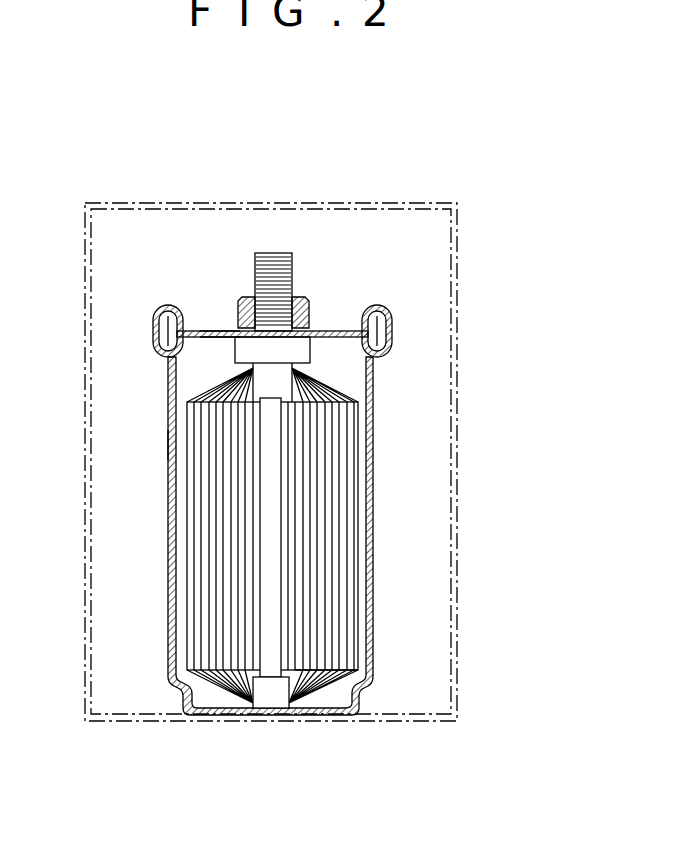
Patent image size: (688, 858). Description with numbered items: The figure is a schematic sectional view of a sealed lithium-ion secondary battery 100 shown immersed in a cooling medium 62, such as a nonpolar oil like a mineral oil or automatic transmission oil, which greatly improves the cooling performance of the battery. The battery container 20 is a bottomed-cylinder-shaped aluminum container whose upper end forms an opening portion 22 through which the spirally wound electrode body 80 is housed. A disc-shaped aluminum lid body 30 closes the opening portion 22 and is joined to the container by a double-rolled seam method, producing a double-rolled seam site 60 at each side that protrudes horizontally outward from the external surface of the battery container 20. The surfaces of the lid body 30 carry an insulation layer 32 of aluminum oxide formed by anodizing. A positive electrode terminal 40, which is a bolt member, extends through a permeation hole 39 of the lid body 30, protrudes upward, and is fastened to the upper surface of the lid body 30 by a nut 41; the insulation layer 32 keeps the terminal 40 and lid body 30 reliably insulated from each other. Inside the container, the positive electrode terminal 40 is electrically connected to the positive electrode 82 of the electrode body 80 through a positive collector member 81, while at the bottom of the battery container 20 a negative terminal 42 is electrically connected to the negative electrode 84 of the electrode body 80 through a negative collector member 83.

The lithium-ion secondary battery 100 is at (398, 188).
The battery container 20 is at (374, 445).
The opening portion 22 is at (216, 348).
The lid body 30 is at (335, 336).
The insulation layer 32 is at (199, 330).
The permeation hole 39 is at (270, 339).
The positive electrode terminal 40 is at (290, 266).
The nut 41 is at (251, 297).
The negative terminal 42 is at (263, 700).
The double-rolled seam site 60 is at (153, 314).
The cooling medium 62 is at (432, 322).
The electrode body 80 is at (358, 524).
The positive collector member 81 is at (310, 388).
The positive electrode 82 is at (323, 369).
The negative collector member 83 is at (332, 688).
The negative electrode 84 is at (308, 696).